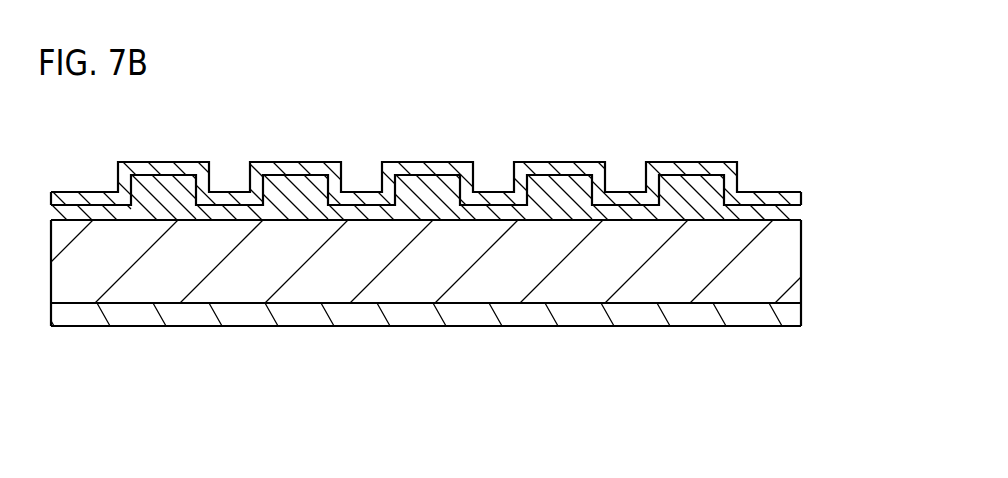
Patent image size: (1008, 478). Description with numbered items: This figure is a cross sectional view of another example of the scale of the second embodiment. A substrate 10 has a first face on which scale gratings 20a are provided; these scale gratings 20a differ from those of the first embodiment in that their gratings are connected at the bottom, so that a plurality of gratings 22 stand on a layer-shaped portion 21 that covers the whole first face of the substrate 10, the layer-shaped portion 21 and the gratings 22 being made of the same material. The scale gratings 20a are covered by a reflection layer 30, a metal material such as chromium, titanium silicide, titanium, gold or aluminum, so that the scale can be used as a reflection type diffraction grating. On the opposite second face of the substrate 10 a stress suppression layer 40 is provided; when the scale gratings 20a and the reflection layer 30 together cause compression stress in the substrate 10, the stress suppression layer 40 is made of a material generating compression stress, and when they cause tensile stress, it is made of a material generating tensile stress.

The substrate 10 is at (792, 273).
The stress suppression layer 40 is at (792, 318).
The reflection layer 30 is at (803, 192).
The scale gratings 20a is at (421, 134).
The layer-shaped portion 21 is at (762, 212).
The gratings 22 is at (568, 173).